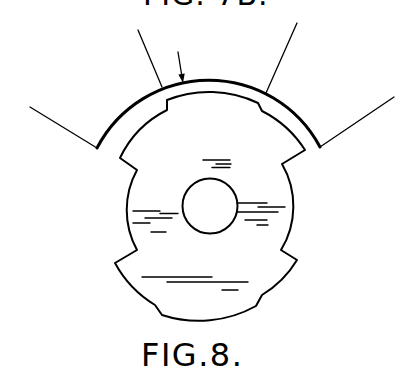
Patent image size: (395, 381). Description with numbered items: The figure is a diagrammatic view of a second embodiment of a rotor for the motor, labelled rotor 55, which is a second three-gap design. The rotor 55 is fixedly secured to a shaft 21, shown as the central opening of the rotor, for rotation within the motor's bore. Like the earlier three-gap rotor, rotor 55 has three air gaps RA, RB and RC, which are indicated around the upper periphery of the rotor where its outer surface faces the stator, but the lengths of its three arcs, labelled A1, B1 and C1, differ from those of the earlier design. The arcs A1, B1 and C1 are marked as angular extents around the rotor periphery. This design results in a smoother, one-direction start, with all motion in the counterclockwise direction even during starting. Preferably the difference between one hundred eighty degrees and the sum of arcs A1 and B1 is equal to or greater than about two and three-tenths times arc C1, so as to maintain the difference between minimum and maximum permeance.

The rotor 55 is at (292, 208).
The shaft 21 is at (226, 233).
The arc A1 is at (388, 98).
The arc B1 is at (120, 110).
The arc C1 is at (332, 53).
The air gap RA is at (281, 134).
The air gap RB is at (142, 141).
The air gap RC is at (189, 101).